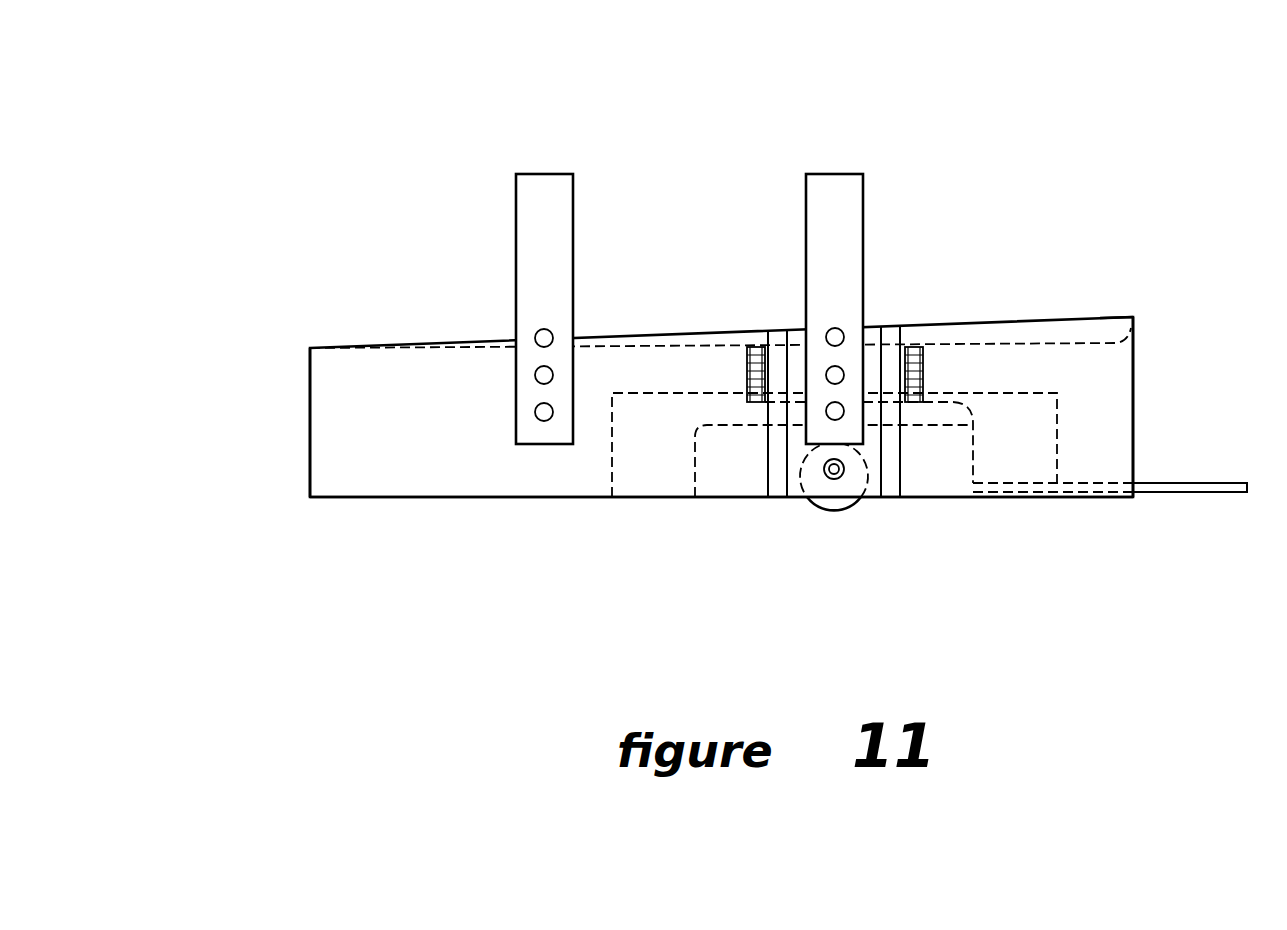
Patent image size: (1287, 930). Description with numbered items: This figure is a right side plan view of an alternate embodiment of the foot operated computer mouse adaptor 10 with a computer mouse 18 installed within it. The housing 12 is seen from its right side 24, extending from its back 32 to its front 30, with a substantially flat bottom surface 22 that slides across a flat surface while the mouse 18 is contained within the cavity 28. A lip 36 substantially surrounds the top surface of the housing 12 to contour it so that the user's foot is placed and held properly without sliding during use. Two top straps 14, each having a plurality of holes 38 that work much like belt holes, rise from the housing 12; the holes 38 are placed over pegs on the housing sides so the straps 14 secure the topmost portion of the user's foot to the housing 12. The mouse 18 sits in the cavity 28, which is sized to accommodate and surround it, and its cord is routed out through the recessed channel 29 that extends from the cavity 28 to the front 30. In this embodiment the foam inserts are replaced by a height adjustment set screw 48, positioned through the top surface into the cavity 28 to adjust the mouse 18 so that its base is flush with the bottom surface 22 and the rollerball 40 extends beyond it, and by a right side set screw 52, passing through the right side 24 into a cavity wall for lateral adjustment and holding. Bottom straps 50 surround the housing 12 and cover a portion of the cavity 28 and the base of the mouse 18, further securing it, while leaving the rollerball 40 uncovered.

The foot operated computer mouse adaptor 10 is at (358, 530).
The housing 12 is at (412, 344).
The top straps 14 is at (547, 227).
The computer mouse 18 is at (940, 477).
The bottom surface 22 is at (545, 498).
The right side 24 is at (460, 410).
The cavity 28 is at (1012, 445).
The recessed channel 29 is at (1163, 483).
The front 30 is at (1135, 395).
The back 32 is at (310, 397).
The lip 36 is at (1131, 317).
The holes 38 is at (553, 412).
The rollerball 40 is at (835, 508).
The height adjustment set screw 48 is at (747, 373).
The bottom straps 50 is at (775, 480).
The right side set screw 52 is at (830, 477).